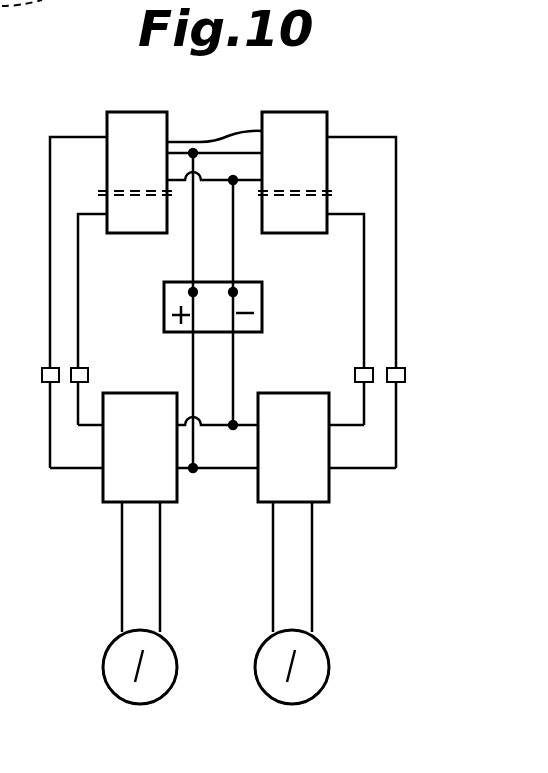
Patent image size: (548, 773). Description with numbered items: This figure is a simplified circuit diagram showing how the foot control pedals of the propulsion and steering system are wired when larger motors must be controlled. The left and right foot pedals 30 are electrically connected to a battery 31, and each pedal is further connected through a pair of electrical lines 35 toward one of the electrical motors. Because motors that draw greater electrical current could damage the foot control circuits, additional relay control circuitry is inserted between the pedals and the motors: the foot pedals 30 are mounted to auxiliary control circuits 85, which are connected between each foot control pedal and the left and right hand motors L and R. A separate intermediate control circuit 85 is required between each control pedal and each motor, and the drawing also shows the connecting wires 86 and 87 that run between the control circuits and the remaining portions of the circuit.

The foot pedal 30 is at (218, 138).
The battery 31 is at (272, 297).
The electrical lines 35 is at (75, 228).
The auxiliary control circuit 85 is at (252, 492).
The wire 86 is at (84, 470).
The wire 87 is at (99, 427).
The left hand motor L is at (104, 648).
The right hand motor R is at (334, 638).